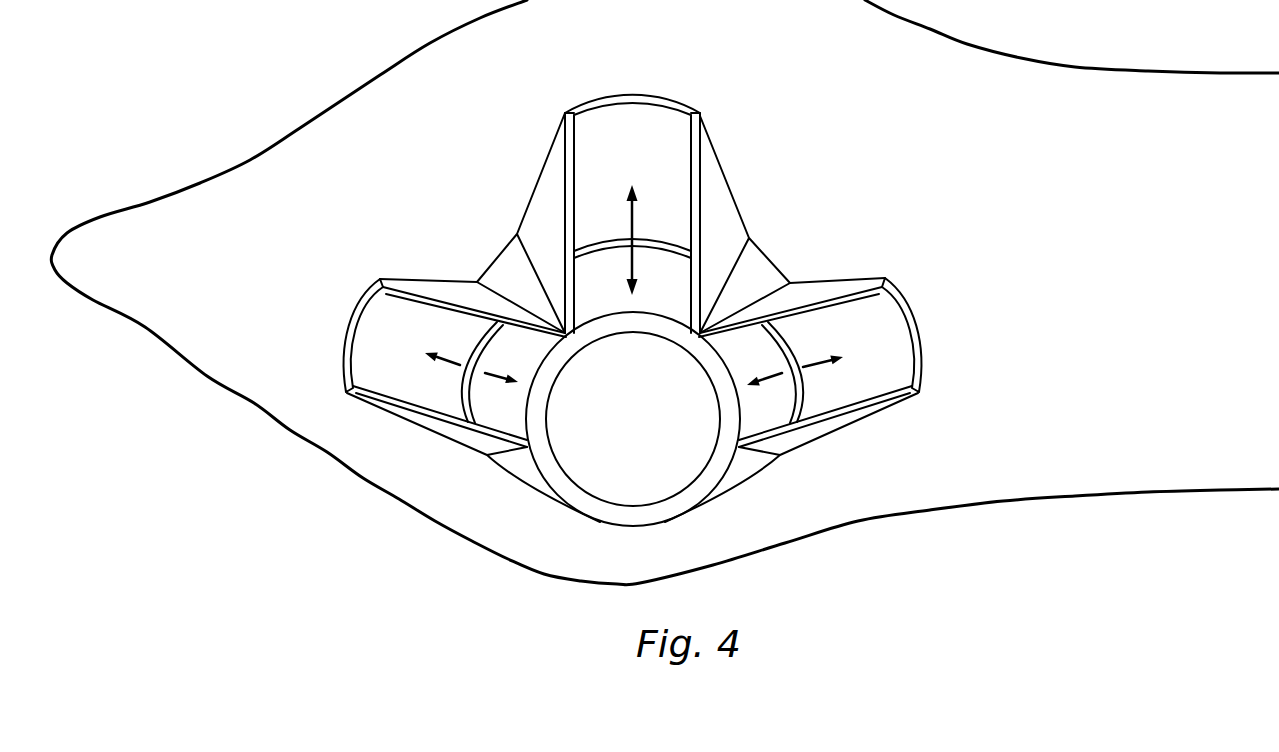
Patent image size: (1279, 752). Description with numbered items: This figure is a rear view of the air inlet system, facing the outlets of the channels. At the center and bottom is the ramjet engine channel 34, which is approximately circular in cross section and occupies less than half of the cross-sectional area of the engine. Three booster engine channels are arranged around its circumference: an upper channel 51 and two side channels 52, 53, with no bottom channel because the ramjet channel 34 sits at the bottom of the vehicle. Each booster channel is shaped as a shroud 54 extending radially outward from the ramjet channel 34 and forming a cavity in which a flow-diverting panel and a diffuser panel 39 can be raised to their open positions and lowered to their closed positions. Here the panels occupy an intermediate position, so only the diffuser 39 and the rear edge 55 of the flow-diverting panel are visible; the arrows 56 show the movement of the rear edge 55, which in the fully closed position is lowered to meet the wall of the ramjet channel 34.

The ramjet engine channel 34 is at (662, 463).
The upper channel 51 is at (643, 125).
The diffuser panel 39 is at (597, 160).
The rear edge of the flow-diverting panel 55 is at (674, 249).
The shroud 54 is at (714, 198).
The arrows 56 is at (632, 265).
The side channel 52 is at (383, 334).
The side channel 53 is at (888, 343).